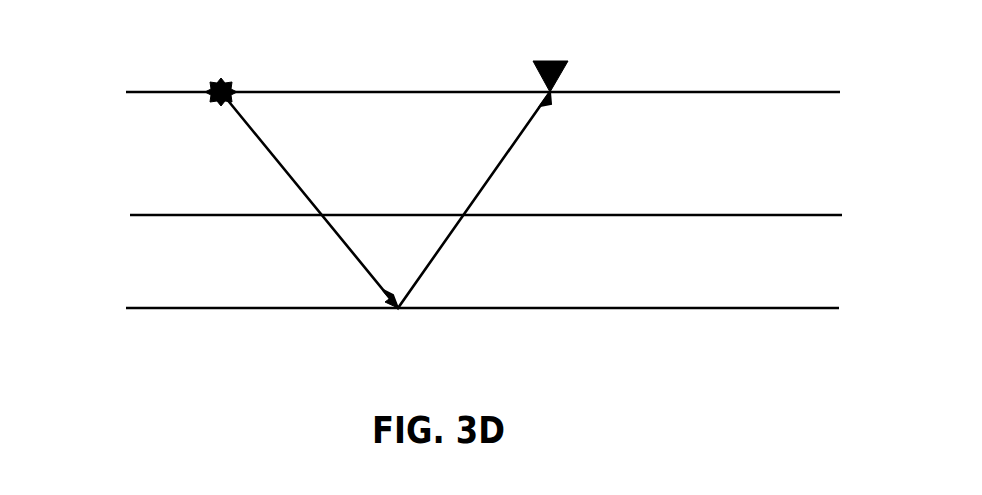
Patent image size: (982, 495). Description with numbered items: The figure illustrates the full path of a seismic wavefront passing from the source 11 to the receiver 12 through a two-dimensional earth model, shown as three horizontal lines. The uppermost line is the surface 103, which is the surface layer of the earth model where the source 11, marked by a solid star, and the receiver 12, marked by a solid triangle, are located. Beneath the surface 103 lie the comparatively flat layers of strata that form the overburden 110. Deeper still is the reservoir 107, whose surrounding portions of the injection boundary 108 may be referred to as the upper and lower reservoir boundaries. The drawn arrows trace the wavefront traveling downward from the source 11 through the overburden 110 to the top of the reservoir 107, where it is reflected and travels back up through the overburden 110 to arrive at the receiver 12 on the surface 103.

The source 11 is at (237, 87).
The receiver 12 is at (563, 82).
The surface 103 is at (708, 90).
The overburden 110 is at (130, 162).
The injection boundary 108 is at (708, 216).
The reservoir 107 is at (130, 265).